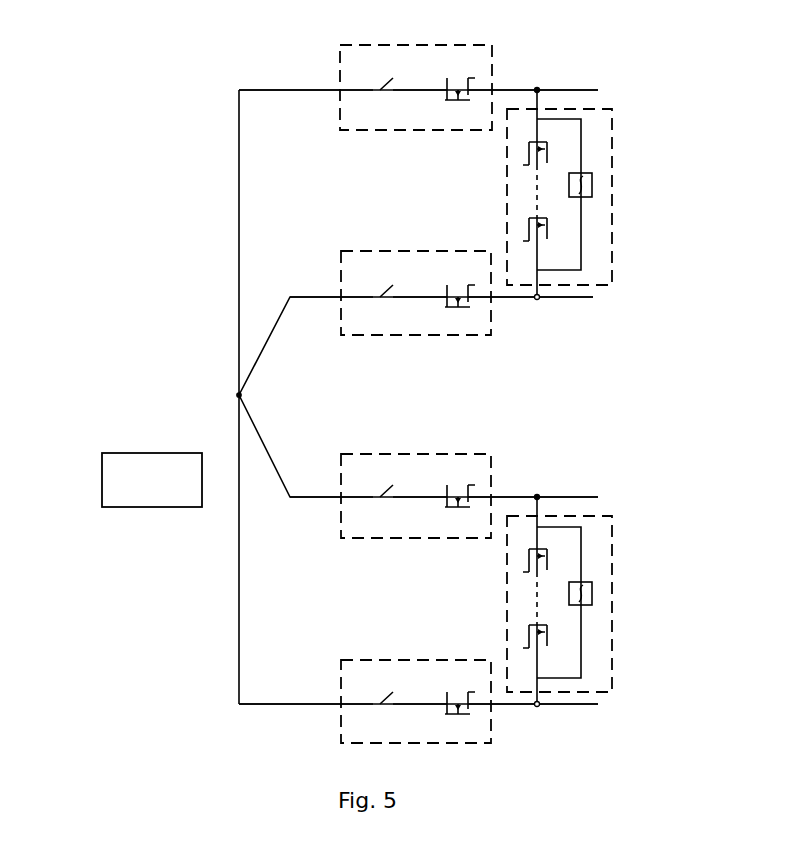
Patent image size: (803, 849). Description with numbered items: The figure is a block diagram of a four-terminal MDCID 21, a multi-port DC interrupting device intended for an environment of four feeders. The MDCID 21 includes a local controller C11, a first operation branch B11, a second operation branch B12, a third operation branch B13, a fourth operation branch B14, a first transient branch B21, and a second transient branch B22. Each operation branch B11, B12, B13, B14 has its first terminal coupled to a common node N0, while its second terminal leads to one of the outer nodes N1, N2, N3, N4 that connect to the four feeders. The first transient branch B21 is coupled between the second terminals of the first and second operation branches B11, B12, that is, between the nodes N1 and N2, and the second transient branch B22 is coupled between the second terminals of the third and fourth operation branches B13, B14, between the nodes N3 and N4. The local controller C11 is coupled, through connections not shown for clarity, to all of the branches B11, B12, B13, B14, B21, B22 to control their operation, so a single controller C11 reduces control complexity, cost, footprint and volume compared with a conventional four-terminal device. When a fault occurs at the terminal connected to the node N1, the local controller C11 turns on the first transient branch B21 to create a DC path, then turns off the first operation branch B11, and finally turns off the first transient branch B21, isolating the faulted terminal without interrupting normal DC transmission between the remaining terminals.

The four-terminal MDCID 21 is at (208, 55).
The local controller C11 is at (120, 462).
The common node N0 is at (238, 394).
The node connecting to the first terminal N1 is at (537, 88).
The node N2 is at (540, 300).
The node N3 is at (537, 495).
The node N4 is at (540, 706).
The first operation branch B11 is at (353, 60).
The second operation branch B12 is at (355, 262).
The third operation branch B13 is at (350, 468).
The fourth operation branch B14 is at (355, 668).
The first transient branch B21 is at (597, 162).
The second transient branch B22 is at (597, 568).